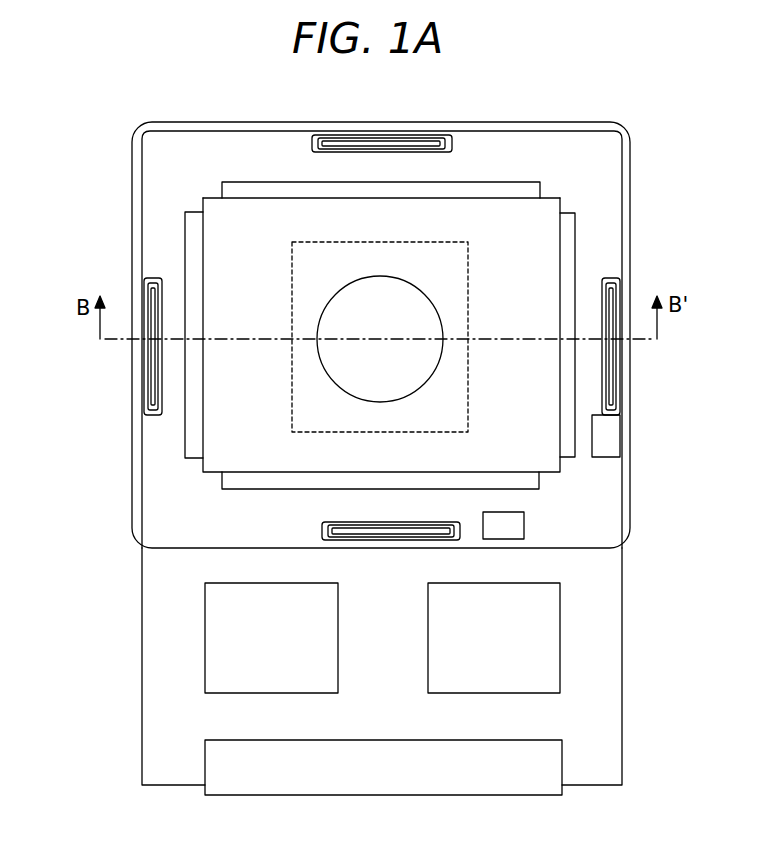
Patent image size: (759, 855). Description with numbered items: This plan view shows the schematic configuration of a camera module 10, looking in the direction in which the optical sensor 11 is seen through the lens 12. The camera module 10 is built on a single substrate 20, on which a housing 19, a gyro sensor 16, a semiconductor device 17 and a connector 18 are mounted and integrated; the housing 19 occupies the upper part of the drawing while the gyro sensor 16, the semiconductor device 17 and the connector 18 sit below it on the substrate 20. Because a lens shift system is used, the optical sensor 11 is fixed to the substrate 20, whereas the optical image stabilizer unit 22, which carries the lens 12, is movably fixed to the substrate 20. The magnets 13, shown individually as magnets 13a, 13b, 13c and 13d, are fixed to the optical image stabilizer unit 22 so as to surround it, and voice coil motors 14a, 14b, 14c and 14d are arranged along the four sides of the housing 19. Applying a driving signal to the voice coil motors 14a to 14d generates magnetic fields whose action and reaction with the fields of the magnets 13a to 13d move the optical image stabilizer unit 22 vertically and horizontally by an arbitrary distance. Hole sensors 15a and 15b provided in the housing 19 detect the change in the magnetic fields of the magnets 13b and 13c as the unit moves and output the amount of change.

The camera module 10 is at (643, 178).
The optical sensor 11 is at (297, 240).
The lens 12 is at (350, 277).
The main board 13 is at (579, 207).
The magnet 13a is at (520, 188).
The magnet 13b is at (577, 224).
The magnet 13c is at (533, 483).
The magnet 13d is at (193, 447).
The voice coil motor 14a is at (400, 142).
The voice coil motor 14b is at (620, 280).
The voice coil motor 14c is at (395, 541).
The voice coil motor 14d is at (150, 280).
The hole sensor 15a is at (612, 438).
The hole sensor 15b is at (512, 528).
The gyro sensor 16 is at (205, 632).
The semiconductor device 17 is at (560, 633).
The connector 18 is at (560, 765).
The housing 19 is at (132, 165).
The substrate 20 is at (622, 693).
The optical image stabilizer (OIS) unit 22 is at (468, 199).